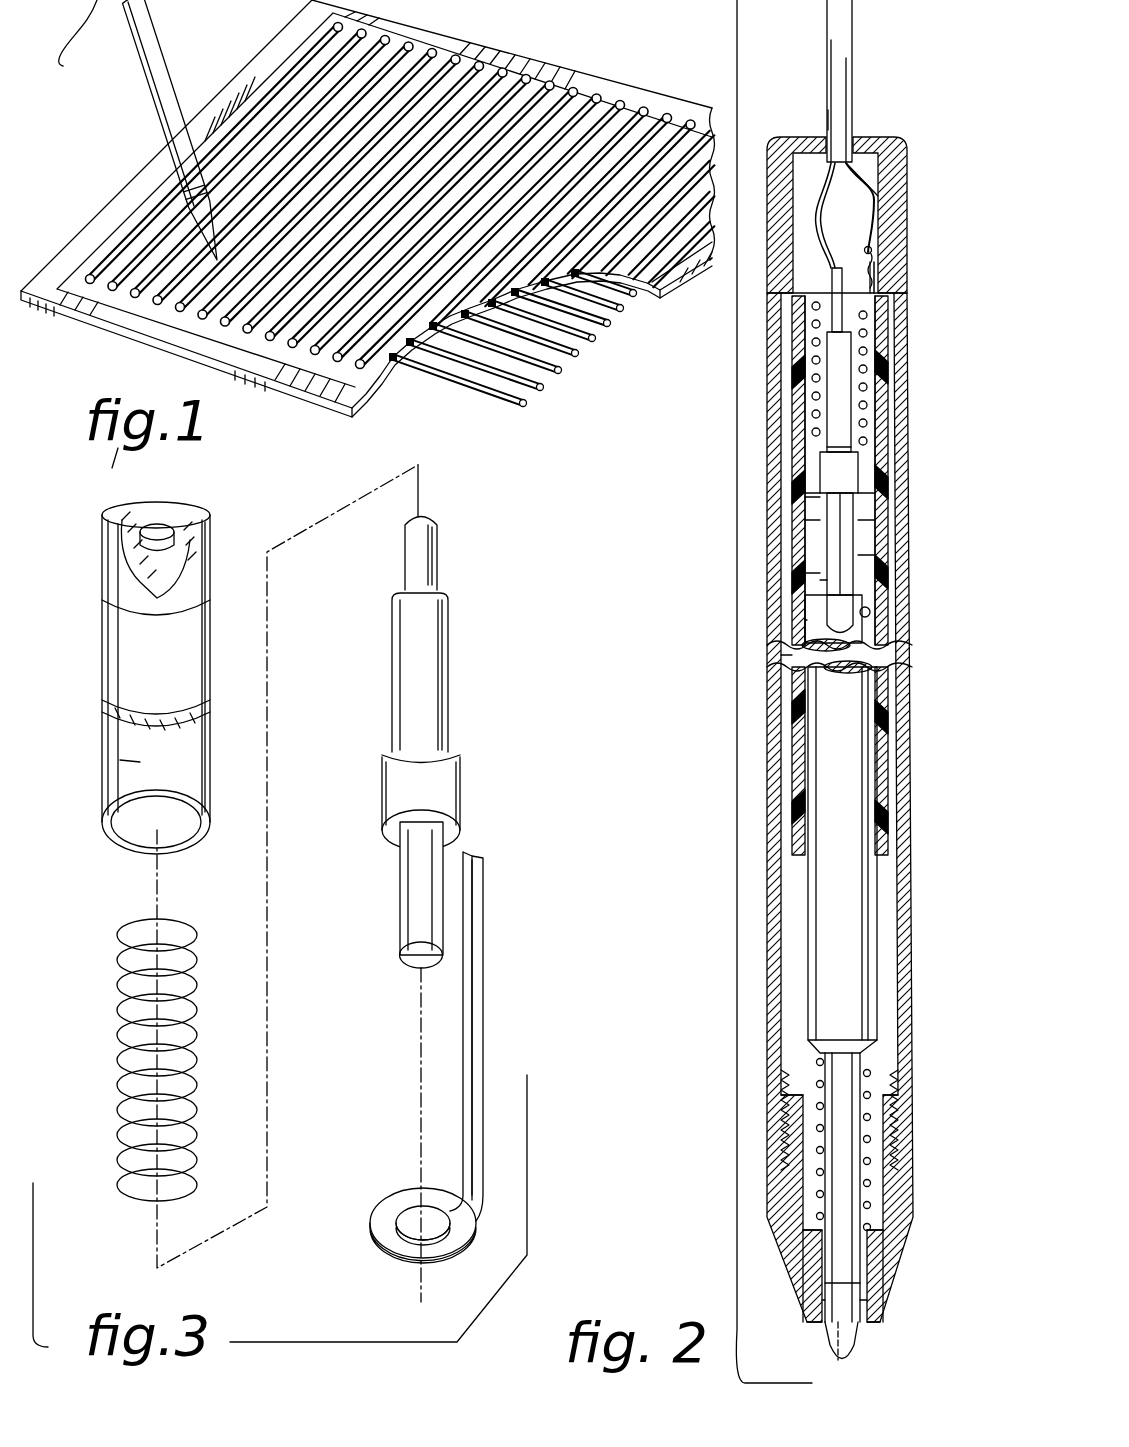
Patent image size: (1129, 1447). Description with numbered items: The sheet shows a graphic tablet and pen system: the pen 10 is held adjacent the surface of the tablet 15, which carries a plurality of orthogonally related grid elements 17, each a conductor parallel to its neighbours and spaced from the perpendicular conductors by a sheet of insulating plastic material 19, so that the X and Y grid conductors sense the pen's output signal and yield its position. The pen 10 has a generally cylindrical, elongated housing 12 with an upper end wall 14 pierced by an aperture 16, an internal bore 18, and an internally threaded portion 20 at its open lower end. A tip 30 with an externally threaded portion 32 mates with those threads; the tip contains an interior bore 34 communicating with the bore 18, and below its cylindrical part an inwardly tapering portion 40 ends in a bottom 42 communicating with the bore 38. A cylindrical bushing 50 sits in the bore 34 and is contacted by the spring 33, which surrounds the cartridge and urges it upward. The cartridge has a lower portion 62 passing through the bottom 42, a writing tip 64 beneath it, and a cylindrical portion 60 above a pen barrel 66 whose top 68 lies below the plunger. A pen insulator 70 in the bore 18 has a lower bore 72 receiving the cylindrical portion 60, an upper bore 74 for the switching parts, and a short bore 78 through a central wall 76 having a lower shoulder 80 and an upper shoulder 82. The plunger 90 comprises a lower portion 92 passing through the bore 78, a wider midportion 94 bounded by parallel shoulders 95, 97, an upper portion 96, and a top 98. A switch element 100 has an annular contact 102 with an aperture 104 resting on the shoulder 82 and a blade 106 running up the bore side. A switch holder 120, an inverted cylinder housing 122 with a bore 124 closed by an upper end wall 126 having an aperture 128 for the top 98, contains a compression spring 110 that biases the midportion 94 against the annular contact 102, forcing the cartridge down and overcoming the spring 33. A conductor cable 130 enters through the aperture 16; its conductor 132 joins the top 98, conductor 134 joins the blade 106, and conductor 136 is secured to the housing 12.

In FIG. 1, the pen 10 is at (172, 72).
In FIG. 2, the housing 12 is at (909, 970).
In FIG. 2, the upper end wall 14 is at (880, 148).
In FIG. 1, the tablet 15 is at (588, 53).
In FIG. 2, the aperture 16 is at (828, 128).
In FIG. 1, the grid elements 17 is at (492, 405).
In FIG. 1, the sheet of insulating plastic material 19 is at (382, 383).
In FIG. 2, the internal bore 18 is at (896, 930).
In FIG. 2, the internally threaded portion 20 is at (906, 1072).
In FIG. 2, the tip 30 is at (908, 1195).
In FIG. 2, the externally threaded portion 32 is at (912, 1120).
In FIG. 2, the spring 33 is at (870, 1133).
In FIG. 2, the interior bore 34 is at (875, 1208).
In FIG. 2, the bore 38 is at (830, 1330).
In FIG. 2, the inwardly tapering portion 40 is at (898, 1272).
In FIG. 2, the bottom 42 is at (870, 1330).
In FIG. 2, the bushing 50 is at (878, 1287).
In FIG. 2, the cylindrical portion 60 is at (857, 873).
In FIG. 2, the lower portion 62 is at (838, 1283).
In FIG. 2, the writing tip 64 is at (850, 1365).
In FIG. 2, the pen barrel 66 is at (790, 657).
In FIG. 2, the top 68 is at (810, 620).
In FIG. 2, the pen insulator 70 is at (889, 718).
In FIG. 2, the lower bore 72 is at (865, 622).
In FIG. 2, the upper bore 74 is at (805, 497).
In FIG. 2, the central wall 76 is at (870, 560).
In FIG. 2, the short bore 78 is at (857, 578).
In FIG. 2, the lower shoulder 80 is at (800, 573).
In FIG. 2, the shoulder 82 is at (852, 503).
In FIG. 2, the plunger 90 is at (852, 593).
In FIG. 3, the plunger 90 is at (447, 694).
In FIG. 2, the lower portion 92 is at (822, 580).
In FIG. 2, the midportion 94 is at (854, 472).
In FIG. 3, the midportion 94 is at (455, 782).
In FIG. 2, the shoulder 95 is at (860, 528).
In FIG. 2, the upper portion 96 is at (845, 363).
In FIG. 3, the upper portion 96 is at (440, 622).
In FIG. 2, the shoulder 97 is at (847, 447).
In FIG. 2, the top 98 is at (843, 290).
In FIG. 3, the top 98 is at (437, 555).
In FIG. 2, the switch element 100 is at (882, 263).
In FIG. 3, the switch element 100 is at (480, 896).
In FIG. 2, the annular contact 102 is at (800, 520).
In FIG. 3, the annular contact 102 is at (392, 1238).
In FIG. 3, the aperture 104 is at (442, 1238).
In FIG. 2, the blade 106 is at (872, 300).
In FIG. 3, the blade 106 is at (480, 957).
In FIG. 2, the spring 110 is at (860, 378).
In FIG. 3, the spring 110 is at (117, 1040).
In FIG. 3, the switch holder 120 is at (100, 645).
In FIG. 2, the cylinder housing 122 is at (800, 362).
In FIG. 3, the cylinder housing 122 is at (130, 752).
In FIG. 2, the bore 124 is at (810, 413).
In FIG. 3, the bore 124 is at (145, 830).
In FIG. 3, the upper end wall 126 is at (185, 515).
In FIG. 3, the aperture 128 is at (160, 528).
In FIG. 2, the conductor cable 130 is at (840, 40).
In FIG. 2, the conductor 132 is at (815, 243).
In FIG. 2, the conductor 134 is at (873, 218).
In FIG. 2, the conductor 136 is at (907, 148).